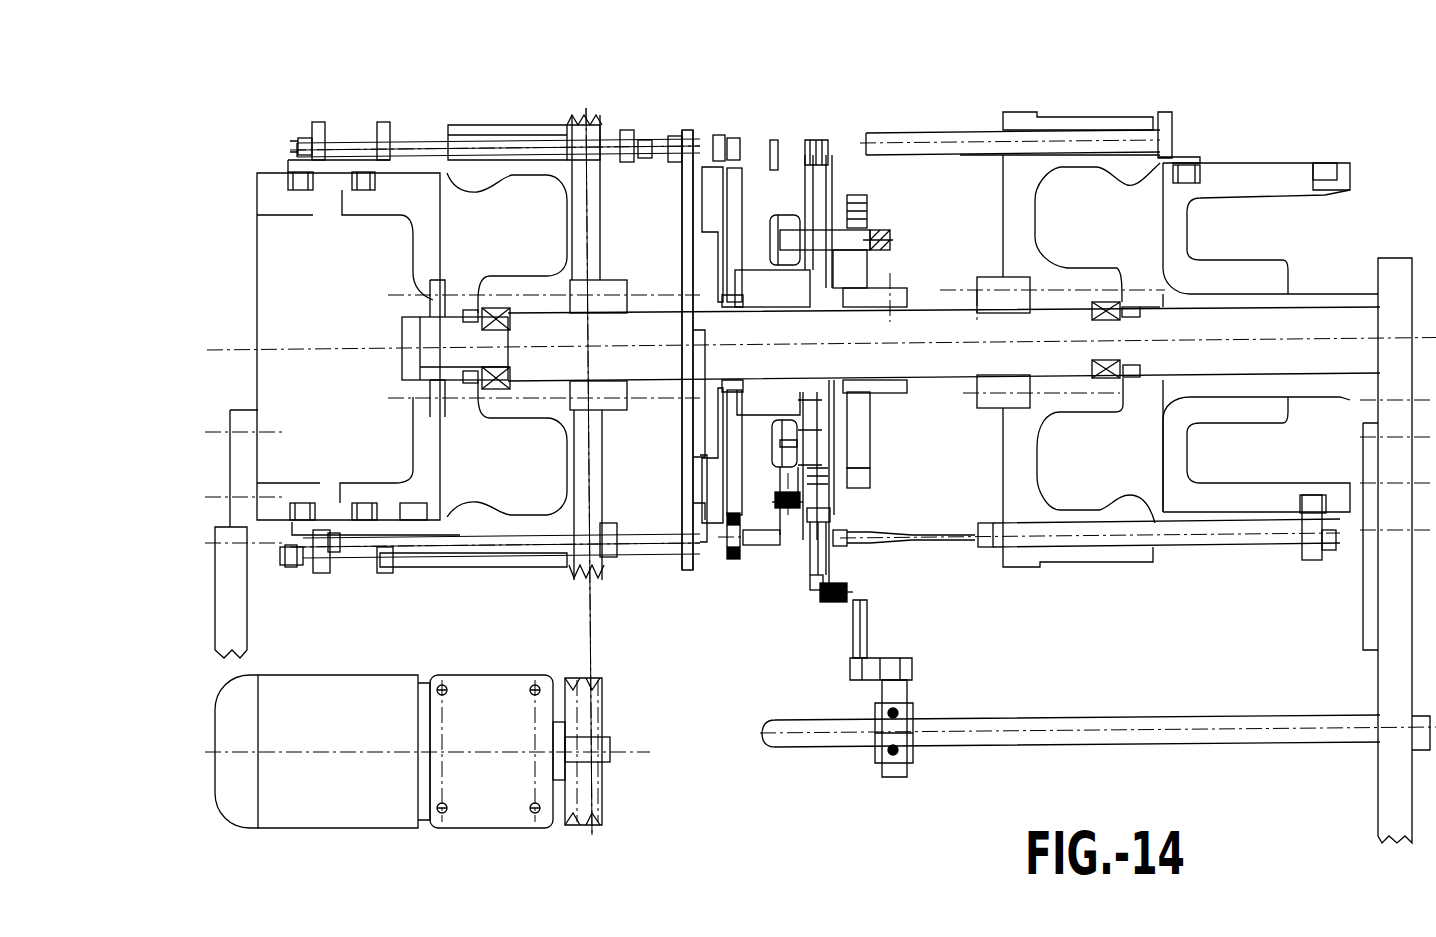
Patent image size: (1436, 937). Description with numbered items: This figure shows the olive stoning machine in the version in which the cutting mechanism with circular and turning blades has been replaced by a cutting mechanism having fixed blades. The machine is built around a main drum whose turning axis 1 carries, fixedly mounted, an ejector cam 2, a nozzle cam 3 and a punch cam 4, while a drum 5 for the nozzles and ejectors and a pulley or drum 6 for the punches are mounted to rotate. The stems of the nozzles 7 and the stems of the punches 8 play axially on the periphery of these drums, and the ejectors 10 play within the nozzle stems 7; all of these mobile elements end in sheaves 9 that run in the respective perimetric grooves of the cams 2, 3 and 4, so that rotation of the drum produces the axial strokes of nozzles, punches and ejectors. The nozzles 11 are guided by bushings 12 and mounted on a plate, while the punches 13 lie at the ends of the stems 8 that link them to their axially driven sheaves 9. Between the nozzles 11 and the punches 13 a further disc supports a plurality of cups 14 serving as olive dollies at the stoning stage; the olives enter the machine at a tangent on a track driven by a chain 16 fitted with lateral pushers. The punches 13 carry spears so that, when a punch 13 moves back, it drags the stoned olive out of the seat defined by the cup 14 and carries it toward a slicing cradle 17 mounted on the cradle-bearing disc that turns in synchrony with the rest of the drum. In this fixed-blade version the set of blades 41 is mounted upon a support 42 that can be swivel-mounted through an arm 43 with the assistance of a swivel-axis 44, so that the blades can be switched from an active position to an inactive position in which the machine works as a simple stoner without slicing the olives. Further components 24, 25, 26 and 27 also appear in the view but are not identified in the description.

The turning axis 1 is at (207, 350).
The ejector cam 2 is at (270, 185).
The nozzle cam 3 is at (383, 195).
The punch cam 4 is at (1298, 165).
The drum for the nozzles and ejectors 5 is at (510, 132).
The pulley or drum for the punches 6 is at (1085, 128).
The nozzle stems 7 is at (427, 140).
The punch stems 8 is at (975, 140).
The sheaves 9 is at (290, 190).
The ejectors 10 is at (352, 147).
The nozzles 11 is at (642, 140).
The bushings 12 is at (673, 136).
The punches 13 is at (862, 145).
The cups 14 is at (725, 138).
The chain 16 is at (815, 140).
The slicing cradle 17 is at (817, 502).
The drive pulley 24 is at (703, 517).
The belt 25 is at (575, 612).
The motor pulley 26 is at (577, 830).
The motor 27 is at (312, 803).
The set of blades 41 is at (810, 583).
The support 42 is at (832, 567).
The arm 43 is at (863, 640).
The swivel-axis 44 is at (913, 753).